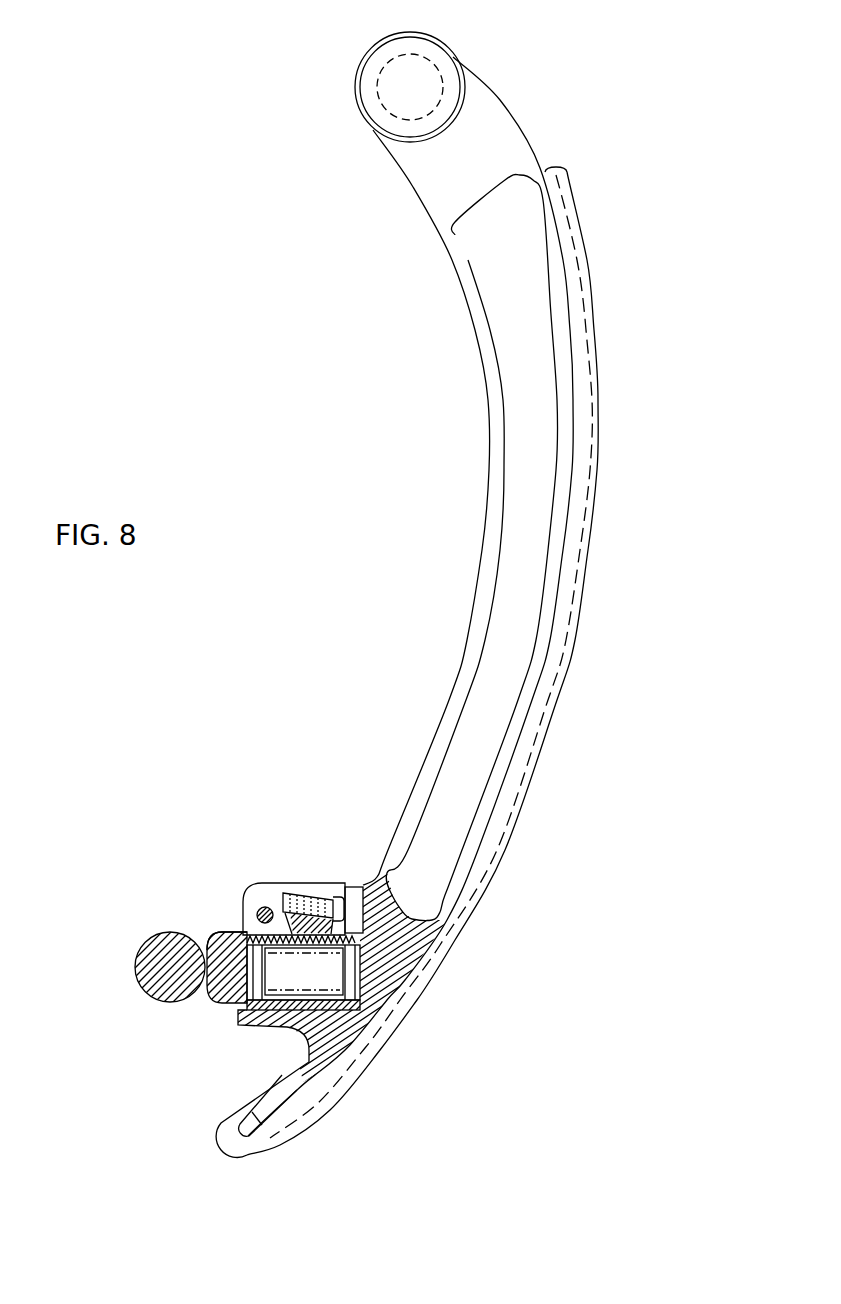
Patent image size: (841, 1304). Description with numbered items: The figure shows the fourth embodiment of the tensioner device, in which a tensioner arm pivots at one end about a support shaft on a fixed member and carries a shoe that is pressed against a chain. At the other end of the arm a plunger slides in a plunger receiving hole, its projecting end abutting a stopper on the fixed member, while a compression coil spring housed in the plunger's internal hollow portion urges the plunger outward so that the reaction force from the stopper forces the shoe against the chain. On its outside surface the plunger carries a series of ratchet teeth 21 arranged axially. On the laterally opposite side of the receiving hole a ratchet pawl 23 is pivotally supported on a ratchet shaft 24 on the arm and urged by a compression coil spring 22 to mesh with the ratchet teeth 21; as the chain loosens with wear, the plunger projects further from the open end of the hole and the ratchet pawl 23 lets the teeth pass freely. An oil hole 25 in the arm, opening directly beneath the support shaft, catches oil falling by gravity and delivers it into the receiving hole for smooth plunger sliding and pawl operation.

The ratchet teeth 21 is at (412, 940).
The compression coil spring 22 is at (323, 883).
The ratchet pawl 23 is at (263, 890).
The ratchet shaft 24 is at (258, 908).
The oil hole 25 is at (355, 893).